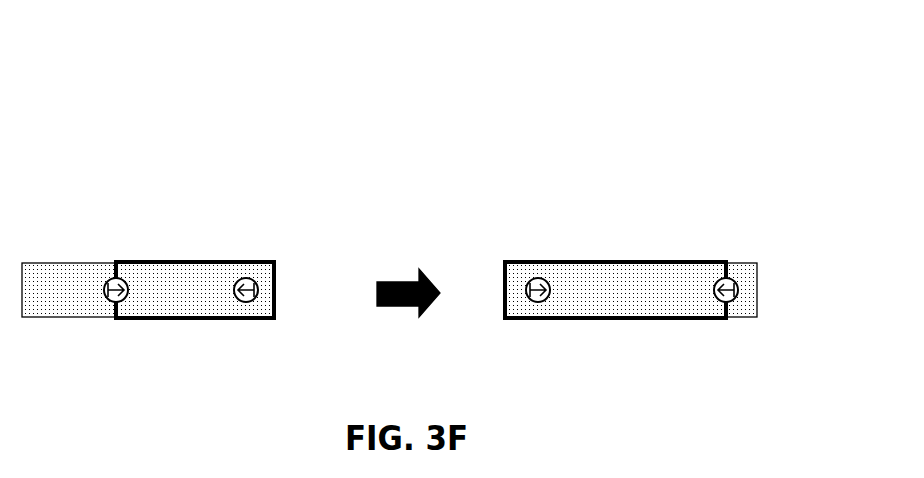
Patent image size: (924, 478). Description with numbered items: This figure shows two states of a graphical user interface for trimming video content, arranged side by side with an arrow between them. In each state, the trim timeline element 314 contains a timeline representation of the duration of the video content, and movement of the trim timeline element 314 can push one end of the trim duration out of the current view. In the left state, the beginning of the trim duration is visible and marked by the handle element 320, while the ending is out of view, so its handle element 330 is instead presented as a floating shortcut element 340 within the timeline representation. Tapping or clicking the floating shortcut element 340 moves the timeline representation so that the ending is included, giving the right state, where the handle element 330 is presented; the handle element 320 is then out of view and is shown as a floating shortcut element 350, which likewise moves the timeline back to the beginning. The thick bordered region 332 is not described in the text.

The trim timeline element 314 is at (279, 281).
The handle element 320 is at (108, 278).
The handle element 330 is at (738, 275).
The frame / thick boundary 332 is at (168, 263).
The floating shortcut element 340 is at (256, 275).
The floating shortcut element 350 is at (543, 278).